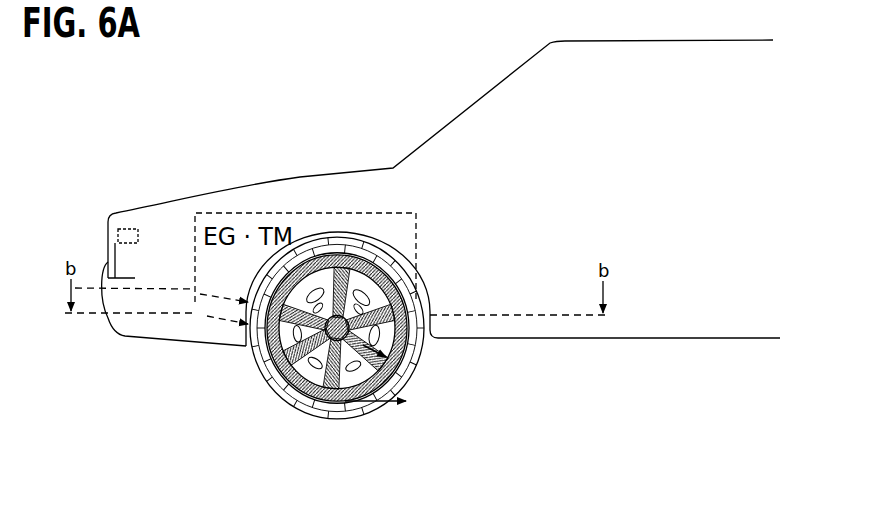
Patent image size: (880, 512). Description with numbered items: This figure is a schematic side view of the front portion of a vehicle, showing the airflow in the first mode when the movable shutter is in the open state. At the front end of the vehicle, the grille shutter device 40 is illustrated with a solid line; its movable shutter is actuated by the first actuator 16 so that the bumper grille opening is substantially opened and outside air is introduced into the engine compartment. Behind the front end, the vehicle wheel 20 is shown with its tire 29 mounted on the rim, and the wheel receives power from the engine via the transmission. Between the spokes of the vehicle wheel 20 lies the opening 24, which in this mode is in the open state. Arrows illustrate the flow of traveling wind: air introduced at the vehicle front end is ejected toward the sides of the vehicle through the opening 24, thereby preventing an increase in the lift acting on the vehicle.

The first actuator 16 is at (129, 228).
The grille shutter device 40 is at (107, 264).
The vehicle wheel 20 is at (270, 368).
The opening 24 is at (292, 406).
The tire 29 is at (410, 362).